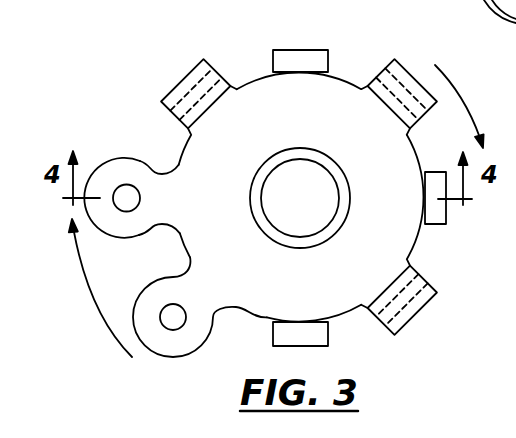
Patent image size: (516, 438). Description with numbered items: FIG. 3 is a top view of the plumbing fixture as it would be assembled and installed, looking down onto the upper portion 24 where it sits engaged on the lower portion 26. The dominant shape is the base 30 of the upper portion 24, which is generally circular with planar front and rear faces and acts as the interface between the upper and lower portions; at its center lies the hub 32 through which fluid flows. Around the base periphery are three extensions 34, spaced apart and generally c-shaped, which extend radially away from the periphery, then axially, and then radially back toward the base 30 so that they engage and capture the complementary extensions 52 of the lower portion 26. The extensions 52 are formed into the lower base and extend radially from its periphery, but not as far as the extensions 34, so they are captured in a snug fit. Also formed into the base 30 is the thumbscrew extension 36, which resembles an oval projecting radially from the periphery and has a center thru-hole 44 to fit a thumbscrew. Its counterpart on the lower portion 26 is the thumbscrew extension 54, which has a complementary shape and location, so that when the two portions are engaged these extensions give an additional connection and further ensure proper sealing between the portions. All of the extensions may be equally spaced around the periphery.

The upper portion 24 is at (248, 84).
The lower portion 26 is at (311, 51).
The base 30 is at (390, 248).
The hub 32 is at (323, 160).
The extensions 34 is at (188, 92).
The thumbscrew extension 36 is at (164, 341).
The center thru-hole 44 is at (172, 318).
The extensions 52 is at (293, 62).
The thumbscrew extension 54 is at (115, 170).